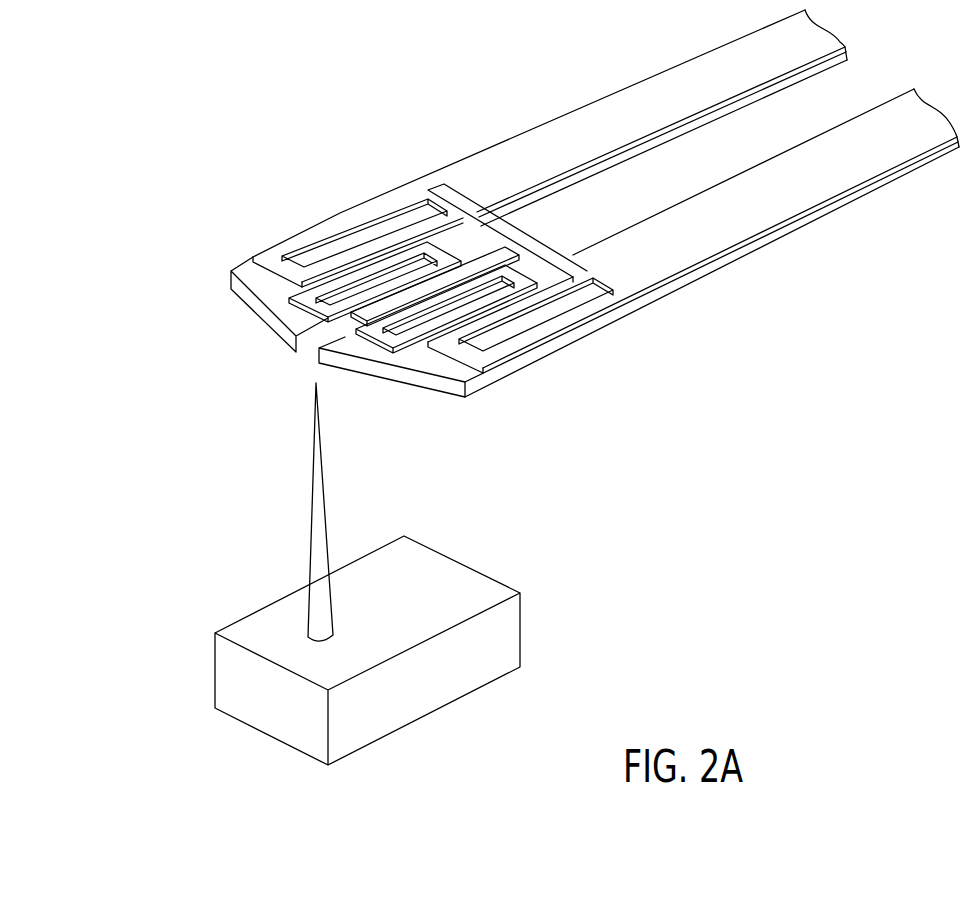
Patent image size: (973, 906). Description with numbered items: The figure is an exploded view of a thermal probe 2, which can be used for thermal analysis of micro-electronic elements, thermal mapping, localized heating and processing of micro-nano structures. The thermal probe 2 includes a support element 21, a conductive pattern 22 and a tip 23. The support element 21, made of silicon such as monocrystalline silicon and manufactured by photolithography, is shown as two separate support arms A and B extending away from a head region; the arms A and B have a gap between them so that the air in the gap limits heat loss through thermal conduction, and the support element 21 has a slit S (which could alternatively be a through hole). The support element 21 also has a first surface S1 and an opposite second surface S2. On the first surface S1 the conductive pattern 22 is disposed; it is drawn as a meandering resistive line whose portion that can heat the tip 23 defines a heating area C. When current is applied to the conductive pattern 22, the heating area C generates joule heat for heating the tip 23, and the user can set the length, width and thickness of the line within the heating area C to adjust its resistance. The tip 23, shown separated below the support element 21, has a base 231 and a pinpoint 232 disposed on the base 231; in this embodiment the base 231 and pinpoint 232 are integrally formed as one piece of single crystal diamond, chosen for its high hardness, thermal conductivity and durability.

The thermal probe 2 is at (92, 122).
The support element 21 is at (640, 302).
The conductive pattern 22 is at (600, 116).
The tip 23 is at (193, 502).
The base 231 is at (292, 617).
The pinpoint 232 is at (316, 472).
The support arm A is at (705, 68).
The support arm B is at (820, 179).
The slit S is at (355, 316).
The heating area C is at (395, 286).
The first surface S1 is at (254, 276).
The second surface S2 is at (427, 392).